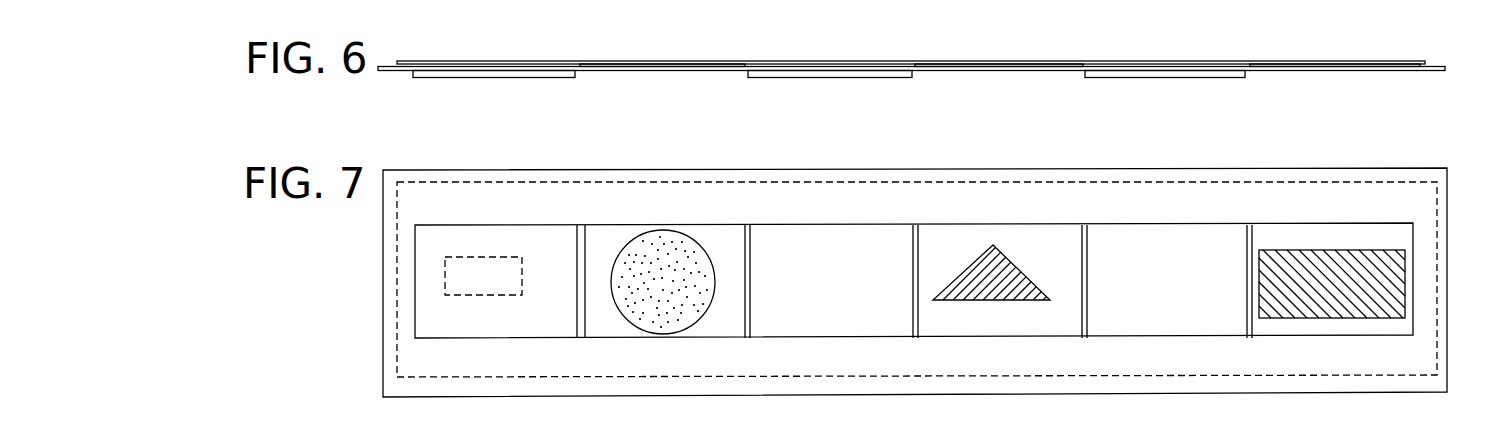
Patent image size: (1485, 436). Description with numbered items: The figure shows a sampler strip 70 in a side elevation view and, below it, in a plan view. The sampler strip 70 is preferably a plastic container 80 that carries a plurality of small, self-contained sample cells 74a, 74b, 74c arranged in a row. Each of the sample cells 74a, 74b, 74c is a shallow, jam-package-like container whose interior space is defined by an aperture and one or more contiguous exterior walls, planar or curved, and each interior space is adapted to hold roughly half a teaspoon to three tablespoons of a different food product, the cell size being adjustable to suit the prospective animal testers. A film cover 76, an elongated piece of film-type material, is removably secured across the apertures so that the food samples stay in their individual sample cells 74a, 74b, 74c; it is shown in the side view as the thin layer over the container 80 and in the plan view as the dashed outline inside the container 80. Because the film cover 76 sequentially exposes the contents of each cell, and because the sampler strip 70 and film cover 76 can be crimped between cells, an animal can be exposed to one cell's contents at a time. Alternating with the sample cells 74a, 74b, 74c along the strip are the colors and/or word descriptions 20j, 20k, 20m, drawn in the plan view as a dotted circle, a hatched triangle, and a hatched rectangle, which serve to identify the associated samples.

In FIG. 6, the sampler strip 70 is at (1058, 40).
In FIG. 7, the sampler strip 70 is at (1267, 150).
In FIG. 6, the film cover 76 is at (397, 62).
In FIG. 7, the film cover 76 is at (428, 182).
In FIG. 6, the plastic container 80 is at (385, 72).
In FIG. 7, the plastic container 80 is at (382, 228).
In FIG. 6, the sample cell 74a is at (472, 80).
In FIG. 7, the sample cell 74a is at (497, 338).
In FIG. 6, the sample cell 74b is at (782, 78).
In FIG. 7, the sample cell 74b is at (818, 337).
In FIG. 6, the sample cell 74c is at (1098, 78).
In FIG. 7, the sample cell 74c is at (1157, 337).
In FIG. 6, the word description 20j is at (643, 70).
In FIG. 7, the word description 20j is at (620, 225).
In FIG. 6, the word description 20k is at (975, 70).
In FIG. 7, the word description 20k is at (990, 225).
In FIG. 6, the word description 20m is at (1317, 70).
In FIG. 7, the word description 20m is at (1307, 223).